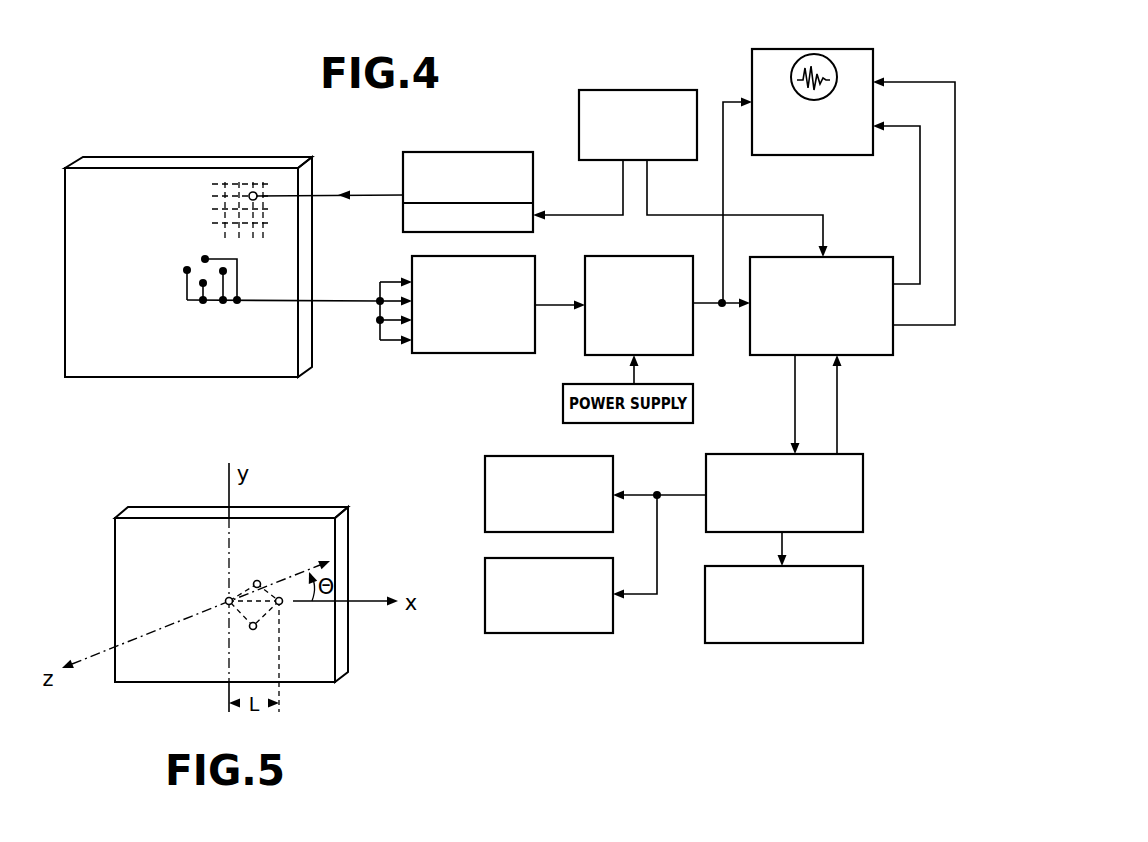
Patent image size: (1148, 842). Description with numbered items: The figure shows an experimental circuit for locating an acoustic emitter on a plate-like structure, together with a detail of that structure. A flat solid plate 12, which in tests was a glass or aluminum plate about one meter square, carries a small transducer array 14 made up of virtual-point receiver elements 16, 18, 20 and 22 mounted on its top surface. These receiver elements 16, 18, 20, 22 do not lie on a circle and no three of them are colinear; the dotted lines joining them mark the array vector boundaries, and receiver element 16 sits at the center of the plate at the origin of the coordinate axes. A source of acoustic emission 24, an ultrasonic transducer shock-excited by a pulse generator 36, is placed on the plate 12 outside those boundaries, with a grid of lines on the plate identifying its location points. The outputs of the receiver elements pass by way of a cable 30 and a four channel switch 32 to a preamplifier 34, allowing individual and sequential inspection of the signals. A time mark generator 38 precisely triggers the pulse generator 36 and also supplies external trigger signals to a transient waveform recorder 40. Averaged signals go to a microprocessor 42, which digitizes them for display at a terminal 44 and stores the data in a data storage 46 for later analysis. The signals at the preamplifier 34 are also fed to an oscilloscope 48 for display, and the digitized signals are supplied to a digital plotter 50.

In FIG. 4, the flat solid plate 12 is at (143, 175).
In FIG. 4, the transducer array 14 is at (188, 285).
In FIG. 5, the transducer array 14 is at (257, 590).
In FIG. 4, the receiver element 16 is at (185, 269).
In FIG. 5, the receiver element 16 is at (226, 599).
In FIG. 4, the receiver element 18 is at (203, 286).
In FIG. 5, the receiver element 18 is at (252, 630).
In FIG. 4, the receiver element 20 is at (226, 272).
In FIG. 5, the receiver element 20 is at (282, 605).
In FIG. 4, the receiver element 22 is at (204, 257).
In FIG. 5, the receiver element 22 is at (255, 582).
In FIG. 4, the source of acoustic emission 24 is at (252, 190).
In FIG. 4, the cable 30 is at (355, 305).
In FIG. 4, the four channel switch 32 is at (448, 355).
In FIG. 4, the preamplifier 34 is at (585, 332).
In FIG. 4, the pulse generator 36 is at (430, 152).
In FIG. 4, the time mark generator 38 is at (600, 90).
In FIG. 4, the transient waveform recorder 40 is at (860, 257).
In FIG. 4, the microprocessor 42 is at (863, 490).
In FIG. 4, the terminal 44 is at (485, 482).
In FIG. 4, the data storage 46 is at (552, 633).
In FIG. 4, the oscilloscope 48 is at (845, 49).
In FIG. 4, the digital plotter 50 is at (863, 590).